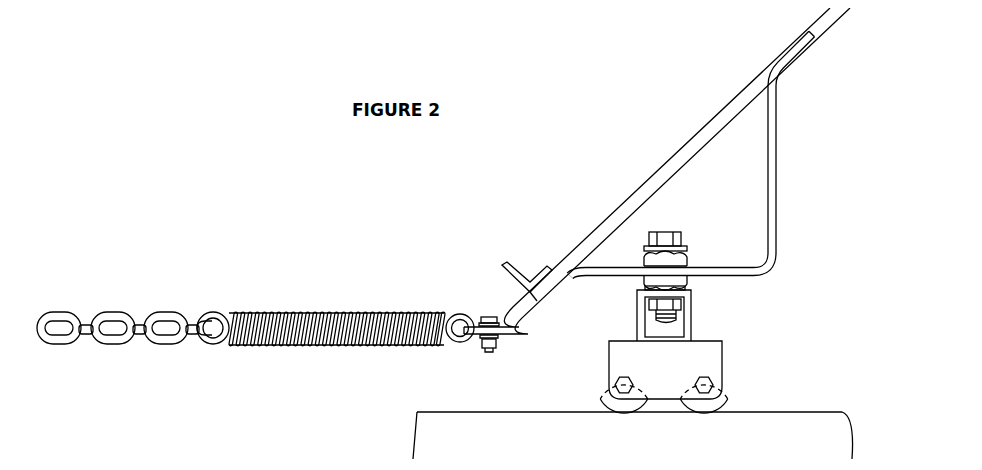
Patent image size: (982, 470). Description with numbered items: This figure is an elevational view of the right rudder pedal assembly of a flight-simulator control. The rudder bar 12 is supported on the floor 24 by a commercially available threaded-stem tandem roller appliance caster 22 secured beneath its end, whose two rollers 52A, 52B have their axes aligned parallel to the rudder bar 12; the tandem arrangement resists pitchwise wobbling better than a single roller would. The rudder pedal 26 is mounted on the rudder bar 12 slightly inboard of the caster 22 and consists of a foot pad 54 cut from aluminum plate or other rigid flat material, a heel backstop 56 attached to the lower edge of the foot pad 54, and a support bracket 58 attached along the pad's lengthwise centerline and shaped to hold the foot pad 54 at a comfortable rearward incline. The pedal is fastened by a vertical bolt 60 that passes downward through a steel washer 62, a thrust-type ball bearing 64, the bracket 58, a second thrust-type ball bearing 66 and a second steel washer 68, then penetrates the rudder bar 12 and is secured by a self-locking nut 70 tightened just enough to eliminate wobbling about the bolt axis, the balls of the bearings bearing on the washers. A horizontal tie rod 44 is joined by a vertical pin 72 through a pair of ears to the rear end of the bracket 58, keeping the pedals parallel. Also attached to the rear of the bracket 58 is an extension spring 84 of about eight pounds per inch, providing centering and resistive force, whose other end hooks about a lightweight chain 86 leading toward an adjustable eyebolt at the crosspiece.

The rudder bar 12 is at (667, 315).
The threaded-stem tandem roller appliance caster 22 is at (672, 366).
The floor 24 is at (785, 402).
The rudder pedal 26 is at (626, 171).
The tie rod 44 is at (467, 307).
The roller 52A is at (604, 375).
The roller 52B is at (728, 380).
The foot pad 54 is at (623, 198).
The heel backstop 56 is at (505, 266).
The support bracket 58 is at (778, 157).
The vertical bolt 60 is at (667, 233).
The steel washer 62 is at (655, 250).
The thrust-type ball bearing 64 is at (690, 258).
The second thrust-type ball bearing 66 is at (690, 278).
The second steel washer 68 is at (648, 290).
The self-locking nut 70 is at (650, 304).
The vertical pin 72 is at (488, 318).
The extension spring 84 is at (300, 346).
The lightweight chain 86 is at (113, 345).